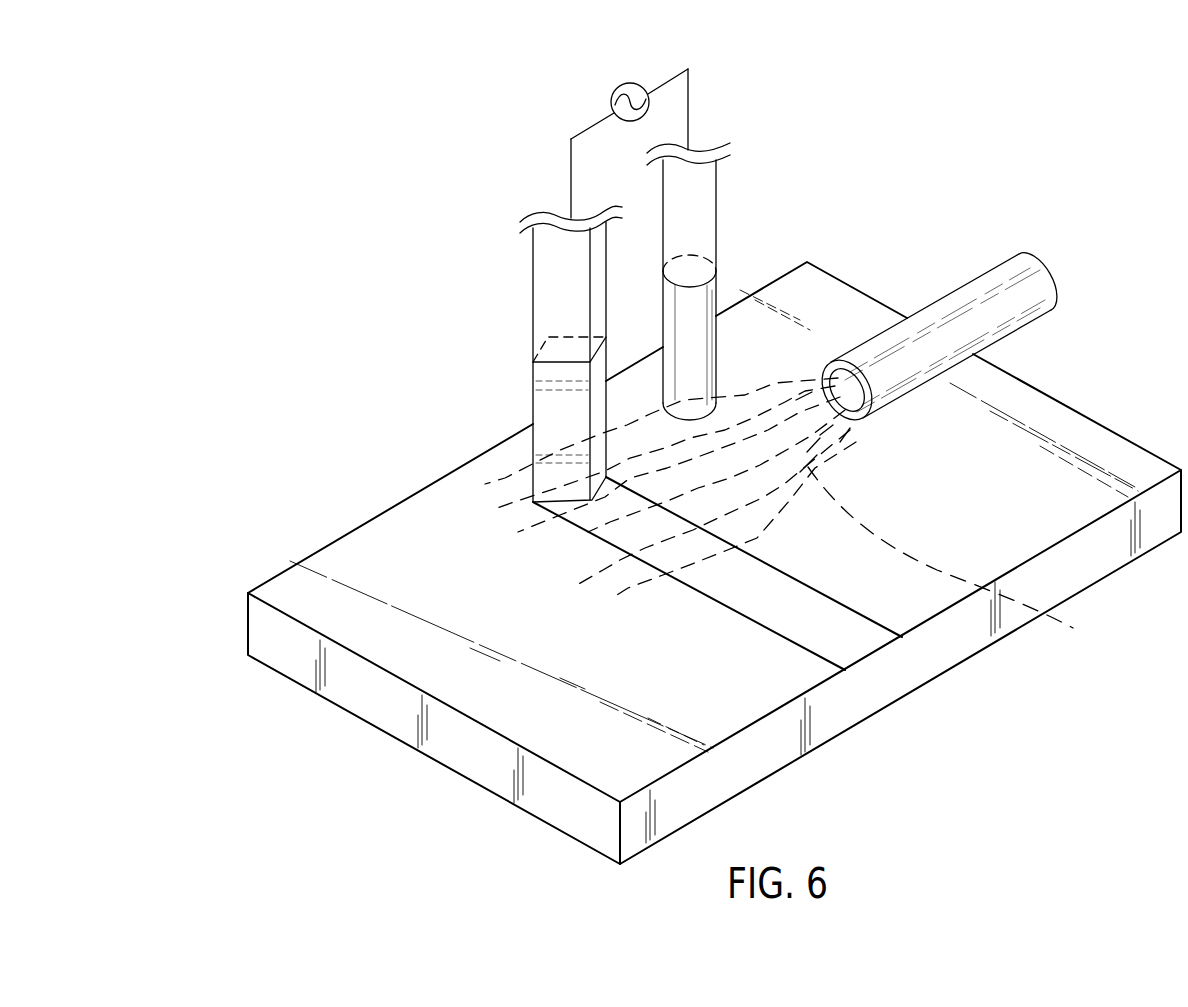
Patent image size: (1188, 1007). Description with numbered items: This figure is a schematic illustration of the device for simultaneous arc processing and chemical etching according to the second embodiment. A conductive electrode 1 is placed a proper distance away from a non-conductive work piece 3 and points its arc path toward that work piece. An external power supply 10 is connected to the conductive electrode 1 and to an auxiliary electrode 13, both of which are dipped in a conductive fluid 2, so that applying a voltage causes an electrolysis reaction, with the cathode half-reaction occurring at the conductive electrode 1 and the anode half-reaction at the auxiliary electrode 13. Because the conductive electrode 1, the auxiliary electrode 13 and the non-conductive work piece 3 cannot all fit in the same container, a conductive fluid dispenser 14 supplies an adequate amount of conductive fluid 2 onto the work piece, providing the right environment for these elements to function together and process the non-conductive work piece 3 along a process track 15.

The conductive electrode 1 is at (538, 395).
The conductive fluid 2 is at (1073, 628).
The non-conductive work piece 3 is at (323, 567).
The external power supply 10 is at (612, 104).
The auxiliary electrode 13 is at (708, 220).
The conductive fluid dispenser 14 is at (952, 293).
The process track 15 is at (835, 647).